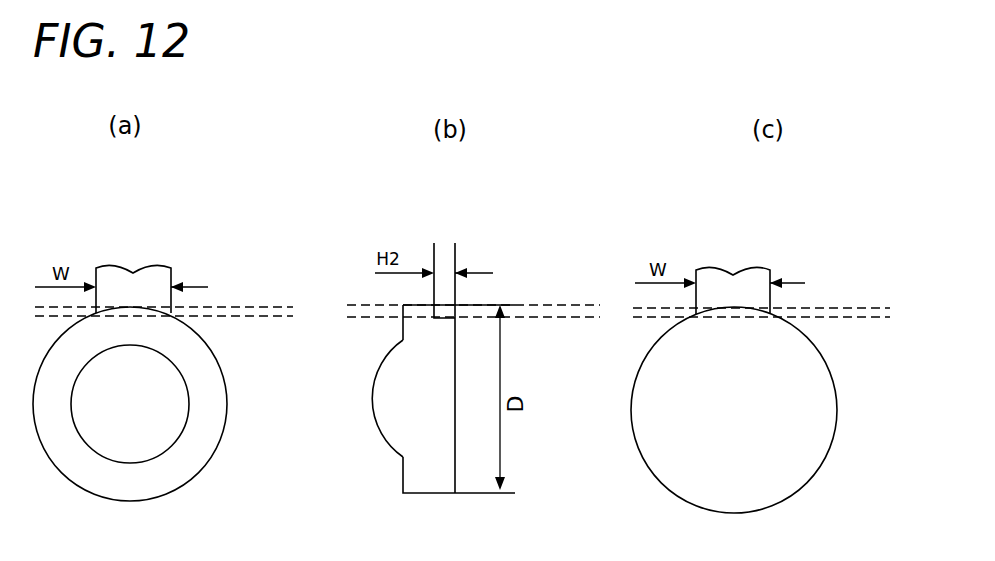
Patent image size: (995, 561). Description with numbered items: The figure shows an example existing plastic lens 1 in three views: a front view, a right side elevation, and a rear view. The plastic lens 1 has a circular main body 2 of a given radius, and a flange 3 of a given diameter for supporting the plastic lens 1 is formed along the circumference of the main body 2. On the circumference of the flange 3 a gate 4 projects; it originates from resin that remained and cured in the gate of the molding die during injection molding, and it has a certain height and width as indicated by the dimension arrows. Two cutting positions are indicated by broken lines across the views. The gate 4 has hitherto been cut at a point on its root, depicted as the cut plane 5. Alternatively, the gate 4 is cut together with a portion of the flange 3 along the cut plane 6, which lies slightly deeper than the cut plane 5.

The plastic lens 1 is at (228, 428).
The main body 2 is at (152, 443).
The flange 3 is at (202, 370).
The gate 4 is at (133, 280).
The cut plane 5 is at (208, 307).
The cut plane 6 is at (265, 315).